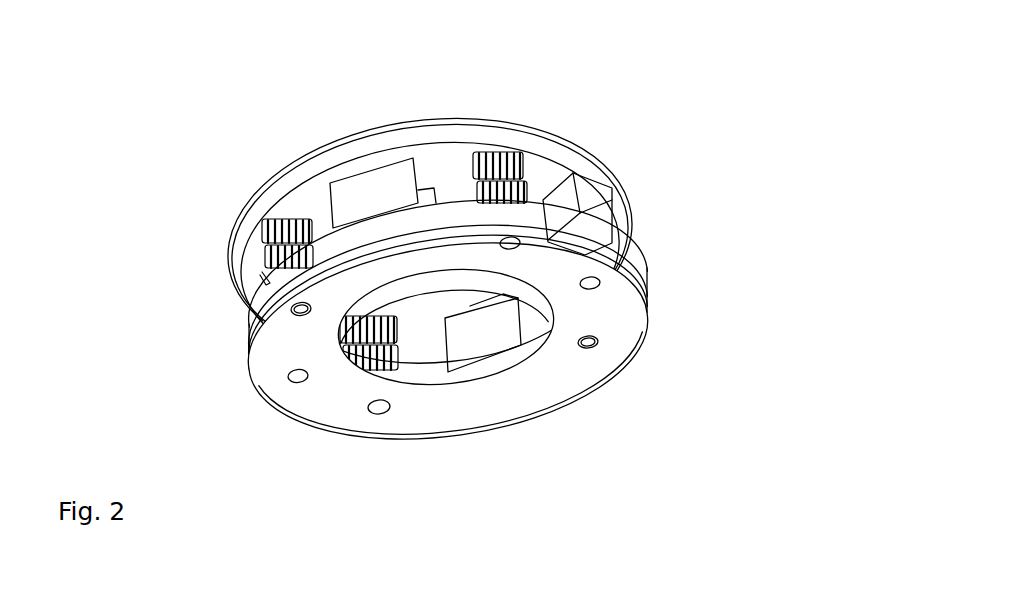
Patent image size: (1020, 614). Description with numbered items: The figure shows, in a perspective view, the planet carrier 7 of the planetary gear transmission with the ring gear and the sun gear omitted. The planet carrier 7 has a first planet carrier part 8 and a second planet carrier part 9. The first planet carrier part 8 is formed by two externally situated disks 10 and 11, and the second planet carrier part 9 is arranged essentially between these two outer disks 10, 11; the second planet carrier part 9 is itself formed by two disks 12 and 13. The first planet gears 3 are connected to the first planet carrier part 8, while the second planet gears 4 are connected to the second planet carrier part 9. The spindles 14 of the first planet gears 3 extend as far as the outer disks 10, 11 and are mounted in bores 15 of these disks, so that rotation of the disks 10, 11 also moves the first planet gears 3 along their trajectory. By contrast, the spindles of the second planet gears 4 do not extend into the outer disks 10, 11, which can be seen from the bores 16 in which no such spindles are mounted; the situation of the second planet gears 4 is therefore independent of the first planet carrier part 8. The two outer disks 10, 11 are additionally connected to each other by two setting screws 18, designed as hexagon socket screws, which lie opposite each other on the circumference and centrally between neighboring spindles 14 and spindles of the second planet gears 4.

The first planet gears 3 is at (252, 248).
The second planet gears 4 is at (478, 195).
The planet carrier 7 is at (222, 91).
The first planet carrier part 8 is at (613, 297).
The second planet carrier part 9 is at (252, 312).
The externally situated disk 10 is at (588, 112).
The externally situated disk 11 is at (548, 390).
The externally situated disk 12 is at (296, 197).
The externally situated disk 13 is at (200, 319).
The spindles 14 is at (296, 306).
The bores 15 is at (310, 321).
The bores 16 is at (518, 237).
The setting screws 18 is at (294, 374).